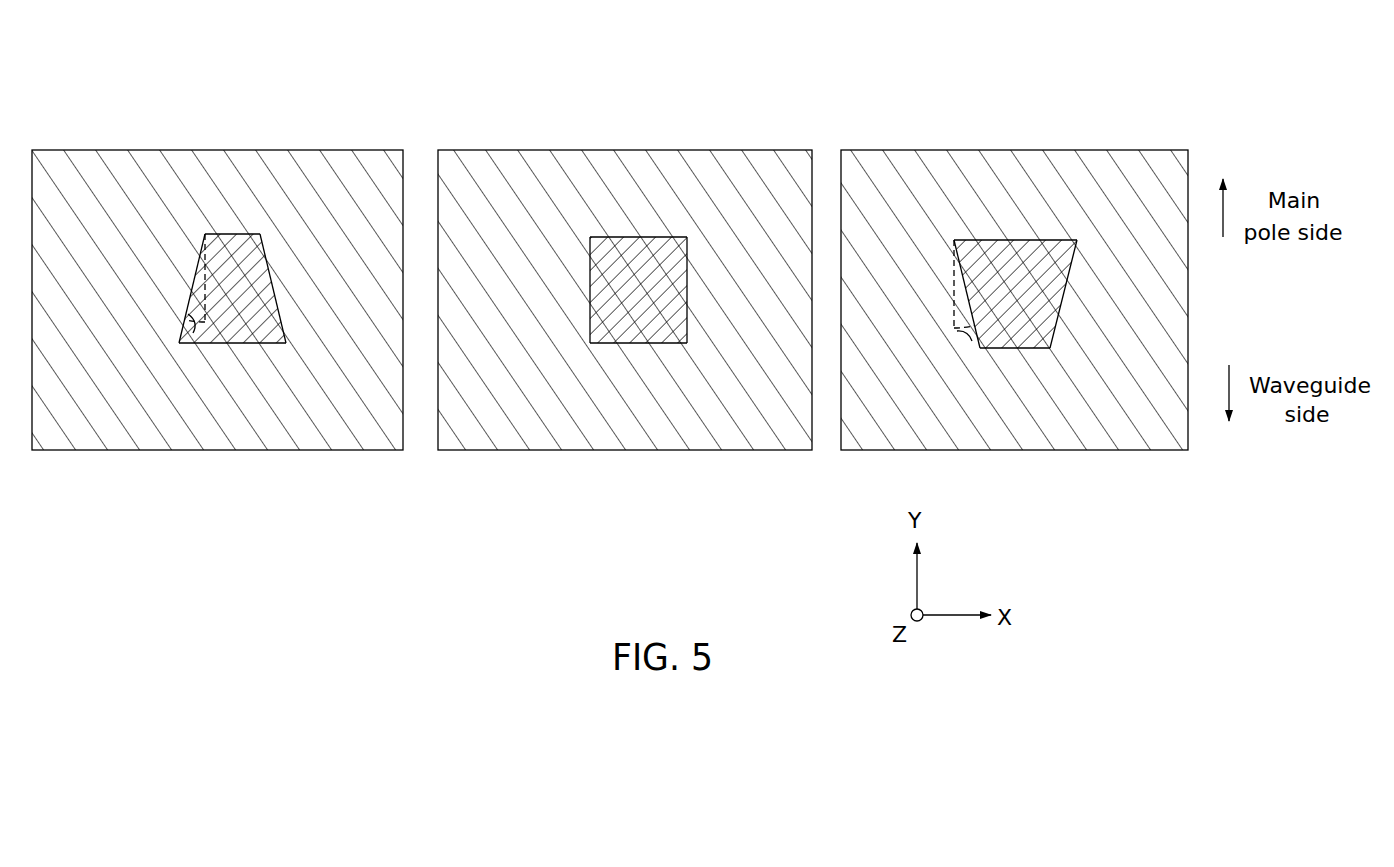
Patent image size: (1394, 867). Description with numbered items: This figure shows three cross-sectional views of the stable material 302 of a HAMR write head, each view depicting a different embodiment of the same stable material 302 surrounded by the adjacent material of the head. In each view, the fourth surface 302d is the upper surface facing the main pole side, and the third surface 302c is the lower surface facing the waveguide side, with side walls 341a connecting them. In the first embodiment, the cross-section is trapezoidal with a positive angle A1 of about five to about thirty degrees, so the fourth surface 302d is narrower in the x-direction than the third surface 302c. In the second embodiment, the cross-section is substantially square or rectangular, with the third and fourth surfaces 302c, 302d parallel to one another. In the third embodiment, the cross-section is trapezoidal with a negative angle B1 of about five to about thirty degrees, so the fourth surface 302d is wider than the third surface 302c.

The stable material 302 is at (961, 116).
The fourth surface 302d is at (228, 234).
The third surface 302c is at (220, 345).
The side wall 341a is at (197, 267).
The positive angle A1 is at (185, 335).
The negative angle B1 is at (955, 340).